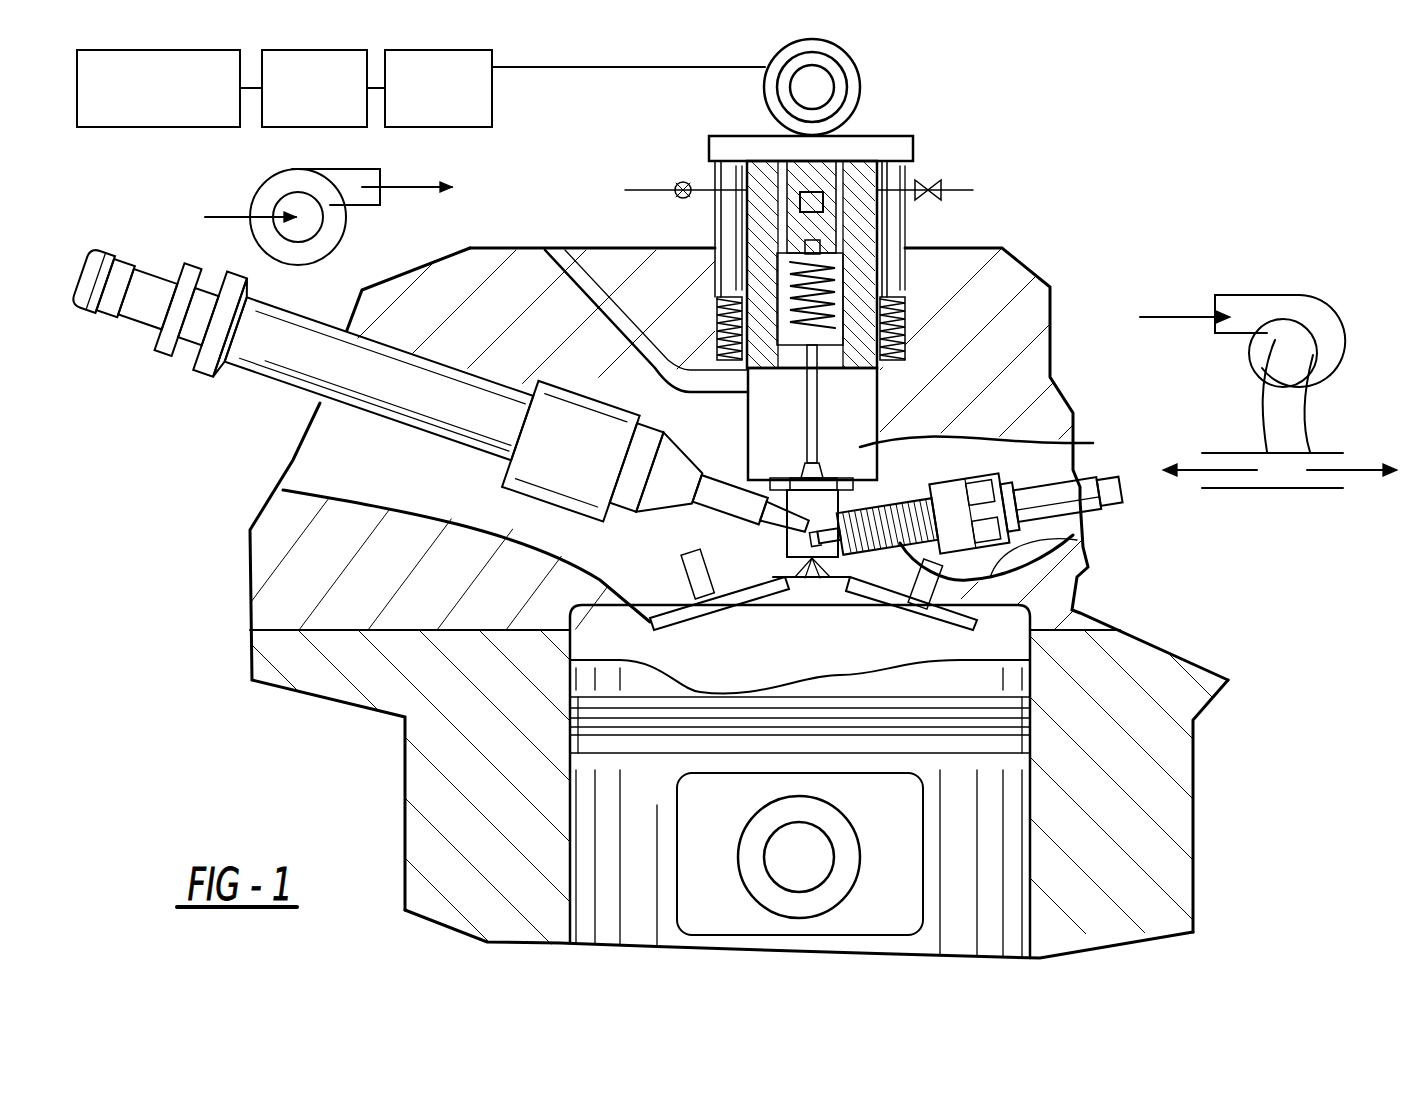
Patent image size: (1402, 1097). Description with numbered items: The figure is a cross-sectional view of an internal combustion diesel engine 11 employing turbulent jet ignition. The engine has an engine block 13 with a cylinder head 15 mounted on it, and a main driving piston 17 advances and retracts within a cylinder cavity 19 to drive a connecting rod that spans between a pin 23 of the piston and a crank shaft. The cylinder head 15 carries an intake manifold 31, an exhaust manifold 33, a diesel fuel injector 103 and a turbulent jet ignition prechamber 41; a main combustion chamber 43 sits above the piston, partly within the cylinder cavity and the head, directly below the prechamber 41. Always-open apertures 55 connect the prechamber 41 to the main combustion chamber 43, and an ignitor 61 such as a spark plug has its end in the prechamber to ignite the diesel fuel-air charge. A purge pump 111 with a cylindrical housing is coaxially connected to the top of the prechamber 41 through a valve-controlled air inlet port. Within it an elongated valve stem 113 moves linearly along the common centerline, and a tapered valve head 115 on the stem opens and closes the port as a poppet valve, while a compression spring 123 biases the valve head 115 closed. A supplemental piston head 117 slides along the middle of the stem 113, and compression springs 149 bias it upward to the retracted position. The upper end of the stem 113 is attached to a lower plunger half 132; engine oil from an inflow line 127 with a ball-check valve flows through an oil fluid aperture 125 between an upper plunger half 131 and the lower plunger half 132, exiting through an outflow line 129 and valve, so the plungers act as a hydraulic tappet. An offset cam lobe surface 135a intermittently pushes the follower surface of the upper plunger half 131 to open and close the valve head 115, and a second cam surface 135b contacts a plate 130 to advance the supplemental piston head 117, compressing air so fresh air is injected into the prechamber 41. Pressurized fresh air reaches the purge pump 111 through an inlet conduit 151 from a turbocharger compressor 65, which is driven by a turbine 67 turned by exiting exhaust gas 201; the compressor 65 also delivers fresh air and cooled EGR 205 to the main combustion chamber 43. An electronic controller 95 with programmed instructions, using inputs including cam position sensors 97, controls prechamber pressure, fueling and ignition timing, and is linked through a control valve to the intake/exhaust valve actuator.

The internal combustion diesel engine 11 is at (1240, 218).
The engine block 13 is at (1140, 790).
The cylinder head 15 is at (995, 283).
The main driving piston 17 is at (1000, 837).
The cylinder cavity 19 is at (570, 860).
The pin 23 is at (812, 863).
The intake manifold 31 is at (323, 470).
The exhaust manifold 33 is at (1013, 420).
The turbulent jet ignition prechamber 41 is at (807, 520).
The main combustion chamber 43 is at (1003, 645).
The apertures 55 is at (803, 594).
The ignitor 61 is at (1040, 575).
The turbocharger compressor 65 is at (272, 186).
The turbocharger turbine 67 is at (1325, 302).
The electronic controller 95 is at (457, 127).
The cam position sensors 97 is at (842, 55).
The diesel fuel injector 103 is at (375, 380).
The purge pump 111 is at (813, 430).
The valve stem 113 is at (850, 383).
The valve head 115 is at (998, 441).
The supplemental piston head 117 is at (850, 352).
The compression spring 123 is at (847, 322).
The oil fluid aperture 125 is at (803, 203).
The engine oil inflow line 127 is at (630, 190).
The engine oil outflow line 129 is at (965, 190).
The plate 130 is at (915, 148).
The upper plunger half 131 is at (893, 120).
The lower plunger half 132 is at (810, 230).
The offset cam lobe surface 135a is at (817, 175).
The cam surface 135b is at (767, 92).
The compression springs 149 is at (720, 325).
The inlet conduit 151 is at (715, 300).
The exiting exhaust gas 201 is at (1175, 318).
The cooled EGR 205 is at (1218, 470).